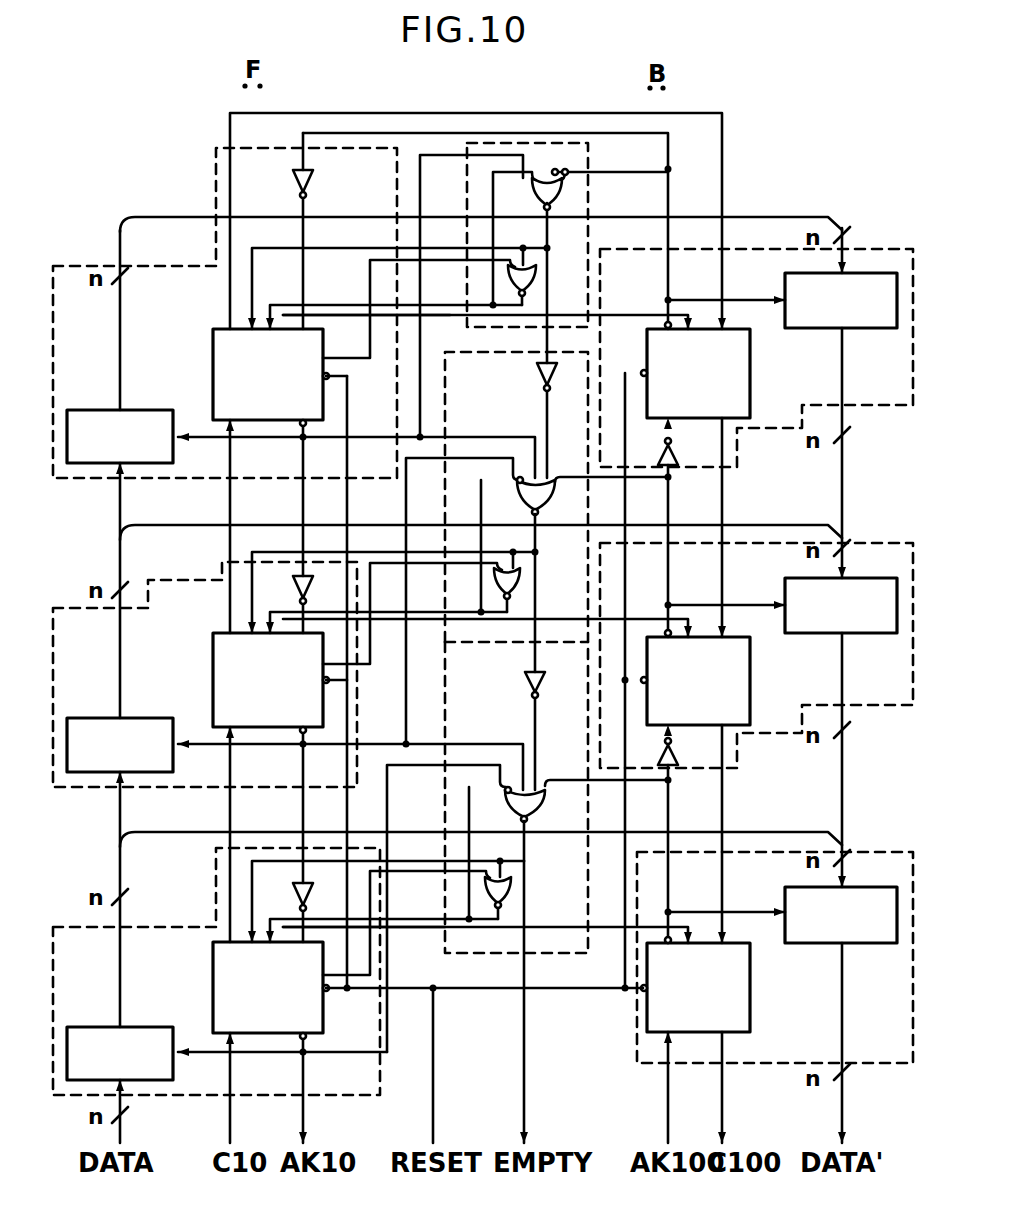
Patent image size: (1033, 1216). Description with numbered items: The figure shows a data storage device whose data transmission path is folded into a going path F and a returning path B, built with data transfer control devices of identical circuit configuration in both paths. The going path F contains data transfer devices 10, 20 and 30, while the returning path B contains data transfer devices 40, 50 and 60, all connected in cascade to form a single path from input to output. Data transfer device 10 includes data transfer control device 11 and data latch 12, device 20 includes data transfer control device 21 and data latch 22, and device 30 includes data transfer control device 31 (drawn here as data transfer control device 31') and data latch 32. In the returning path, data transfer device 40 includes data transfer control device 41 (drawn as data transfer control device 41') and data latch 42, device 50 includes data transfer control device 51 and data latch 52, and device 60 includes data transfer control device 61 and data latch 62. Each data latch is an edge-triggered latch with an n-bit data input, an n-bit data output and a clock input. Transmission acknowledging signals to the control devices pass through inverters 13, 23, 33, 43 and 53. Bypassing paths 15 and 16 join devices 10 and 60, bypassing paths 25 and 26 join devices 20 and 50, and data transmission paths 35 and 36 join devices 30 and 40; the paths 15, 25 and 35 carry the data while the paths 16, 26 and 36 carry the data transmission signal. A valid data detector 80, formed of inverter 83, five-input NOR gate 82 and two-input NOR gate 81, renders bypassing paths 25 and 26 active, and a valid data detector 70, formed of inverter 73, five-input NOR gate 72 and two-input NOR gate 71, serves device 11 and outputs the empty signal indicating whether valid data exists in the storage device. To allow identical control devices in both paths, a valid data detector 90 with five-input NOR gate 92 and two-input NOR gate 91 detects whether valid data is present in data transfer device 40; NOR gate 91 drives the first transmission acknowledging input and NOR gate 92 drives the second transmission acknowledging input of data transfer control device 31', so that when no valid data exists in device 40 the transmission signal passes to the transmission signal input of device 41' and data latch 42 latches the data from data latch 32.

The data transfer device 10 is at (175, 1097).
The data transfer control device 11 is at (326, 1018).
The data latch 12 is at (152, 1027).
The inverter 13 is at (285, 897).
The bypassing path 15 is at (176, 834).
The bypassing path 16 is at (419, 927).
The data transfer device 20 is at (90, 790).
The data transfer control device 21 is at (213, 648).
The data latch 22 is at (162, 718).
The inverter 23 is at (285, 591).
The bypassing path 25 is at (174, 528).
The bypassing path 26 is at (431, 620).
The data transfer device 30 is at (84, 480).
The data transfer control device 31' is at (254, 354).
The data transfer control device 31 is at (254, 354).
The data latch 32 is at (152, 410).
The inverter 33 is at (322, 185).
The data transmission path 35 is at (742, 217).
The data transmission path 36 is at (462, 308).
The data transfer device 40 is at (770, 432).
The data transfer control device 41' is at (723, 370).
The data transfer control device 41 is at (723, 370).
The data latch 42 is at (818, 330).
The inverter 43 is at (687, 454).
The data transfer device 50 is at (770, 737).
The data transfer control device 51 is at (750, 707).
The data latch 52 is at (815, 635).
The inverter 53 is at (687, 754).
The data transfer device 60 is at (768, 1068).
The data transfer control device 61 is at (750, 987).
The data latch 62 is at (880, 947).
The valid data detector 70 is at (580, 952).
The 2-input NOR gate 71 is at (510, 896).
The 5-input NOR gate 72 is at (536, 824).
The inverter 73 is at (552, 689).
The valid data detector 80 is at (447, 352).
The 2-input NOR gate 81 is at (517, 587).
The 5-input NOR gate 82 is at (548, 514).
The inverter 83 is at (564, 380).
The valid data detector 90 is at (590, 152).
The 2-input NOR gate 91 is at (532, 279).
The 5-input NOR gate 92 is at (562, 201).